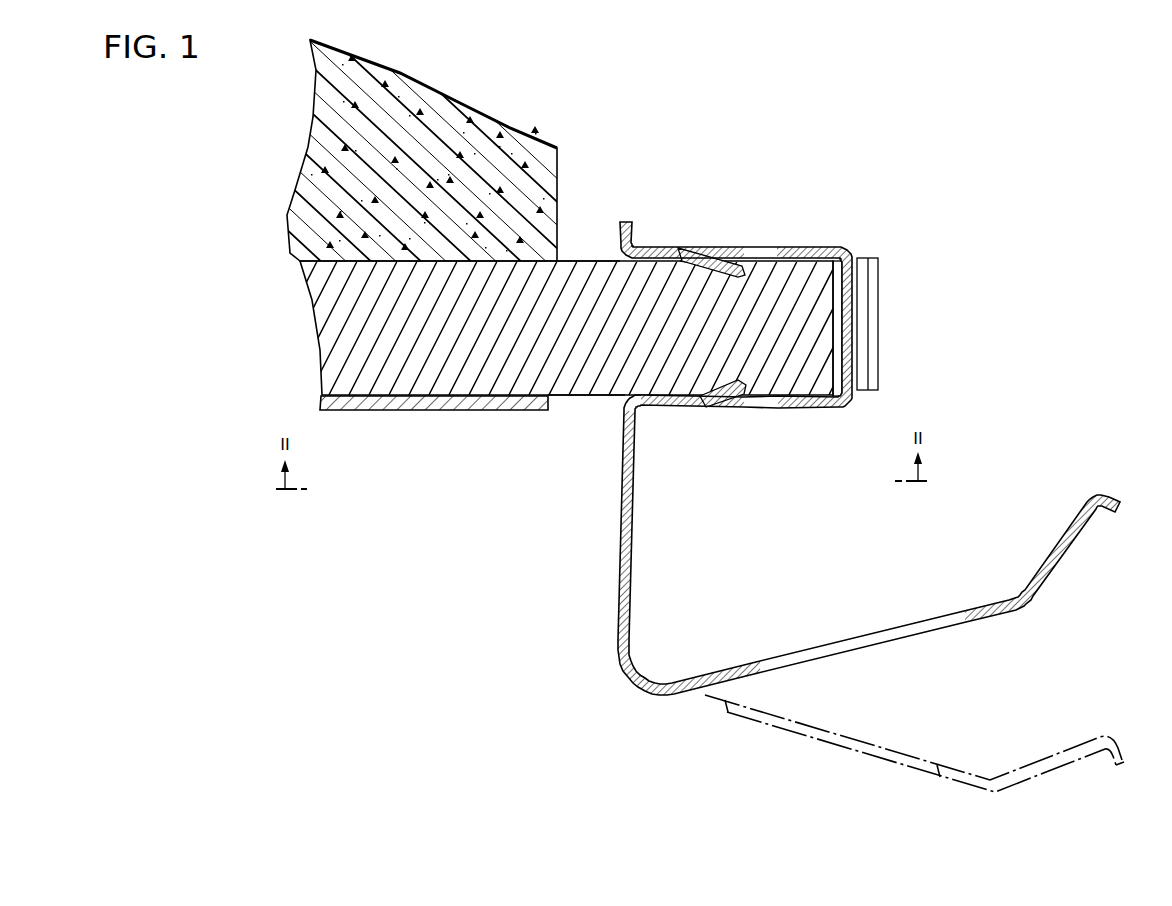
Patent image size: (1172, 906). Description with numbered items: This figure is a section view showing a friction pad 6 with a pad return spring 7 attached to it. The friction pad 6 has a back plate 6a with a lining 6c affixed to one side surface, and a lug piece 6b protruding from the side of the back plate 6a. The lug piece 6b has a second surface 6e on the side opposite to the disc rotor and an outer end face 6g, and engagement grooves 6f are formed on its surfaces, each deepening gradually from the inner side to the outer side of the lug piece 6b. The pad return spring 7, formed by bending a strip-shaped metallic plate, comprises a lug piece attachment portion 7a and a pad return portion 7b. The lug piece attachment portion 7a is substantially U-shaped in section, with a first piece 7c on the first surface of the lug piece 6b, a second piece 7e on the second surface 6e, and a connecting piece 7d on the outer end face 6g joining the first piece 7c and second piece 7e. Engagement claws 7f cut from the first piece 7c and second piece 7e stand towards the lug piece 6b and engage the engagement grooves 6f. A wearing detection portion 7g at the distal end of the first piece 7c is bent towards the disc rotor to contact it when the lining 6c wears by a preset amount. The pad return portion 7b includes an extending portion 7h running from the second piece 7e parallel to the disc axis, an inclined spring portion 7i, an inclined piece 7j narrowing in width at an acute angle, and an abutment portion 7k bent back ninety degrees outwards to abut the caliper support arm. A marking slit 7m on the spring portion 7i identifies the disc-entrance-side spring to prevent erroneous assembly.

The friction pad 6 is at (501, 262).
The back plate 6a is at (335, 318).
The lug piece 6b is at (583, 260).
The lining 6c is at (308, 243).
The second surface 6e is at (600, 396).
The engagement groove 6f is at (716, 262).
The outer end face 6g is at (836, 336).
The pad return spring 7 is at (833, 469).
The lug piece attachment portion 7a is at (774, 315).
The pad return portion 7b is at (833, 555).
The first piece 7c is at (788, 247).
The connecting piece 7d is at (853, 303).
The second piece 7e is at (797, 410).
The engagement claw 7f is at (725, 262).
The wearing detection portion 7g is at (627, 220).
The extending portion 7h is at (620, 510).
The spring portion 7i is at (990, 620).
The inclined piece 7j is at (1068, 548).
The abutment portion 7k is at (1100, 499).
The marking slit 7m is at (763, 665).